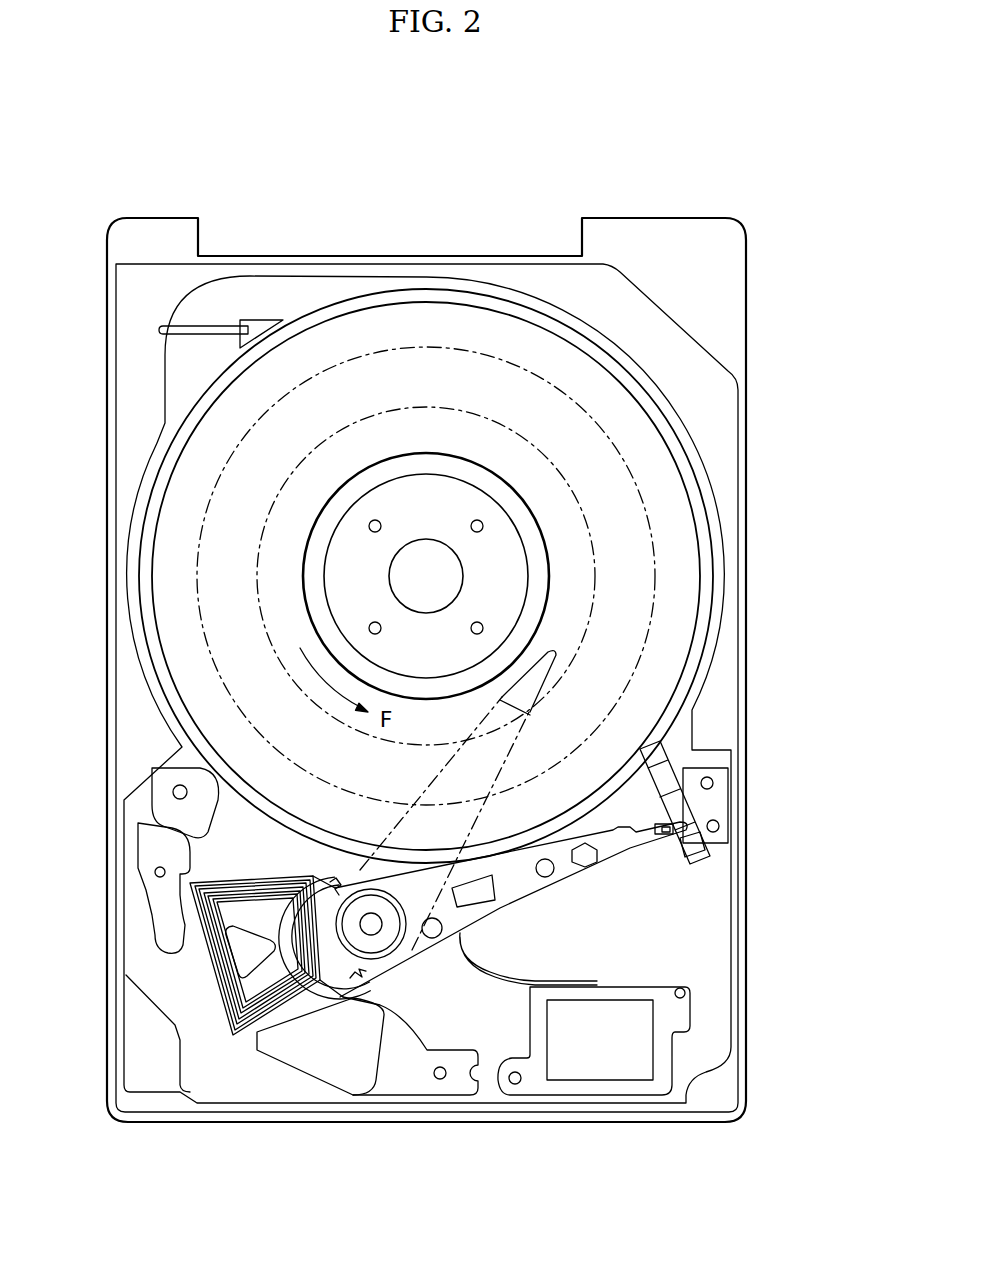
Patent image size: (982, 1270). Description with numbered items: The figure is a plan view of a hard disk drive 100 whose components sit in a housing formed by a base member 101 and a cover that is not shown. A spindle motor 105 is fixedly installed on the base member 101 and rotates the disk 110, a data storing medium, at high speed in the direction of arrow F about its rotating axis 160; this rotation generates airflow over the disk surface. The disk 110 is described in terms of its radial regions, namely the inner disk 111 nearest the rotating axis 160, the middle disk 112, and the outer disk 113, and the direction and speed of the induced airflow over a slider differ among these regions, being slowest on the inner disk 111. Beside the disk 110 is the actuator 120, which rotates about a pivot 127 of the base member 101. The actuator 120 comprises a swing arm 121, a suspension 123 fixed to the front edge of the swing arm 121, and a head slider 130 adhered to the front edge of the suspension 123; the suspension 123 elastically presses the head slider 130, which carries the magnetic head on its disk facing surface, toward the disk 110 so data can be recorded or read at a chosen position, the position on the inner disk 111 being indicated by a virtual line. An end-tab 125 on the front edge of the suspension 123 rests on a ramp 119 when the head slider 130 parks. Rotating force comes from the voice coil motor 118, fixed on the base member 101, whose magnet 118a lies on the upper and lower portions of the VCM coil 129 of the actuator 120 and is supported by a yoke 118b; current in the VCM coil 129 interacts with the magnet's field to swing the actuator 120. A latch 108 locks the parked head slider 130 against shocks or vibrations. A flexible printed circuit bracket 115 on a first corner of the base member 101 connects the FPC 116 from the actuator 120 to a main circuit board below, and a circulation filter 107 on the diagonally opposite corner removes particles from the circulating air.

The hard disk drive 100 is at (772, 262).
The base member 101 is at (722, 690).
The spindle motor 105 is at (462, 497).
The circulation filter 107 is at (218, 330).
The latch 108 is at (155, 880).
The disk 110 is at (516, 182).
The inner disk 111 is at (386, 435).
The middle disk 112 is at (431, 380).
The outer disk 113 is at (481, 330).
The flexible printed circuit bracket 115 is at (602, 1080).
The flexible printed circuit 116 is at (571, 985).
The voice coil motor 118 is at (367, 1110).
The magnet 118a is at (330, 1056).
The yoke 118b is at (407, 1078).
The ramp 119 is at (678, 778).
The actuator 120 is at (432, 967).
The swing arm 121 is at (484, 912).
The suspension 123 is at (632, 843).
The end-tab 125 is at (661, 828).
The pivot 127 is at (373, 928).
The VCM coil 129 is at (225, 1038).
The head slider 130 is at (673, 838).
The rotating axis 160 is at (428, 577).